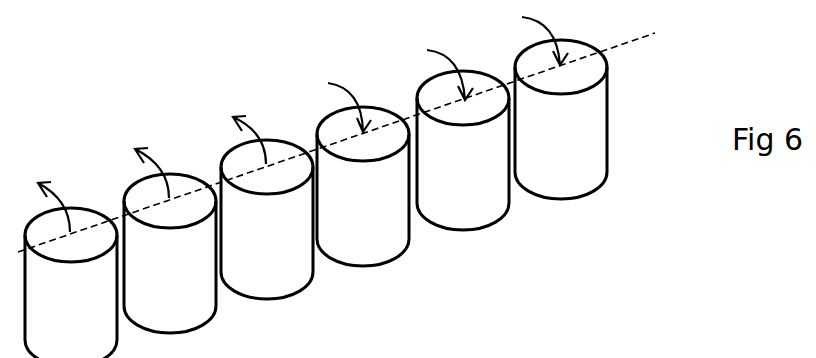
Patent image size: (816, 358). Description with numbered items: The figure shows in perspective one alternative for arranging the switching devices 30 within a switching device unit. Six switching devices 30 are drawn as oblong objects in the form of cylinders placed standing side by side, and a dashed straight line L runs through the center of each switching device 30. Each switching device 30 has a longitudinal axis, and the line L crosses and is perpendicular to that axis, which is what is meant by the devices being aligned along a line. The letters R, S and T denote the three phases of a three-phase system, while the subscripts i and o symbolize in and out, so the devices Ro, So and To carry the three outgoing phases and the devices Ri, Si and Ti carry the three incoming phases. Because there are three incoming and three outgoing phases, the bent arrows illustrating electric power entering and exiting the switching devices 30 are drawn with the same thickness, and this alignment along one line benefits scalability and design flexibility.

The switching devices 30 is at (702, 77).
The line L is at (346, 136).
The outgoing R phase switching device Ro is at (71, 270).
The outgoing S phase switching device So is at (170, 240).
The outgoing T phase switching device To is at (267, 207).
The incoming R phase switching device Ri is at (363, 174).
The incoming S phase switching device Si is at (463, 140).
The incoming T phase switching device Ti is at (561, 108).